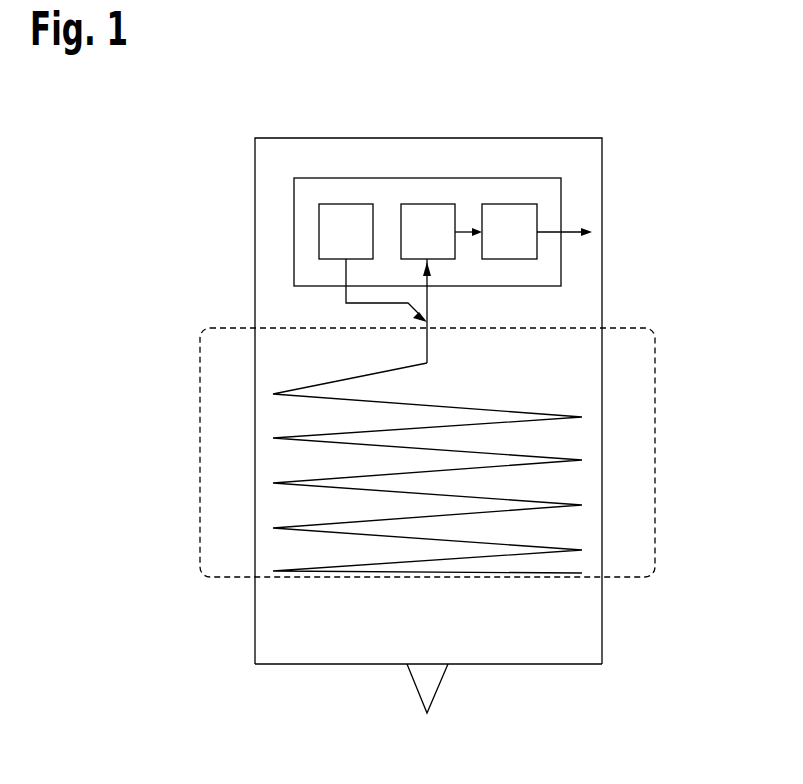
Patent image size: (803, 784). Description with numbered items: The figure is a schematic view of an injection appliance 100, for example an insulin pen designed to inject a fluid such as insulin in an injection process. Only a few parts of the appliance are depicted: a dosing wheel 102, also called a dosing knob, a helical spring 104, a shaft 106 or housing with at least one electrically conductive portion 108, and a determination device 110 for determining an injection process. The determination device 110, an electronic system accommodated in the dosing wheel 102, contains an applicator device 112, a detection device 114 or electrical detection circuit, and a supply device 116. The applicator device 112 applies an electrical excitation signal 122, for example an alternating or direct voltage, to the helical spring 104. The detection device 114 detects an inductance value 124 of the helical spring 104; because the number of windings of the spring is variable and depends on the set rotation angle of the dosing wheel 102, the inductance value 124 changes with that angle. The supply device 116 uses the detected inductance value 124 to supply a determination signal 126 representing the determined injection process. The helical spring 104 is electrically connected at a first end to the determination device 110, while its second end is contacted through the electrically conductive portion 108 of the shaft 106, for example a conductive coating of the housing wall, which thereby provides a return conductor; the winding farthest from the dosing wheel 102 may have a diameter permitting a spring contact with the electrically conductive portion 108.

The injection appliance 100 is at (166, 139).
The dosing wheel 102 is at (255, 198).
The helical spring 104 is at (363, 565).
The shaft 106 is at (602, 628).
The electrically conductive portion 108 is at (200, 440).
The determination device 110 is at (294, 247).
The applicator device 112 is at (343, 204).
The detection device 114 is at (425, 204).
The supply device 116 is at (507, 204).
The excitation signal 122 is at (346, 296).
The inductance value 124 is at (459, 232).
The determination signal 126 is at (571, 232).